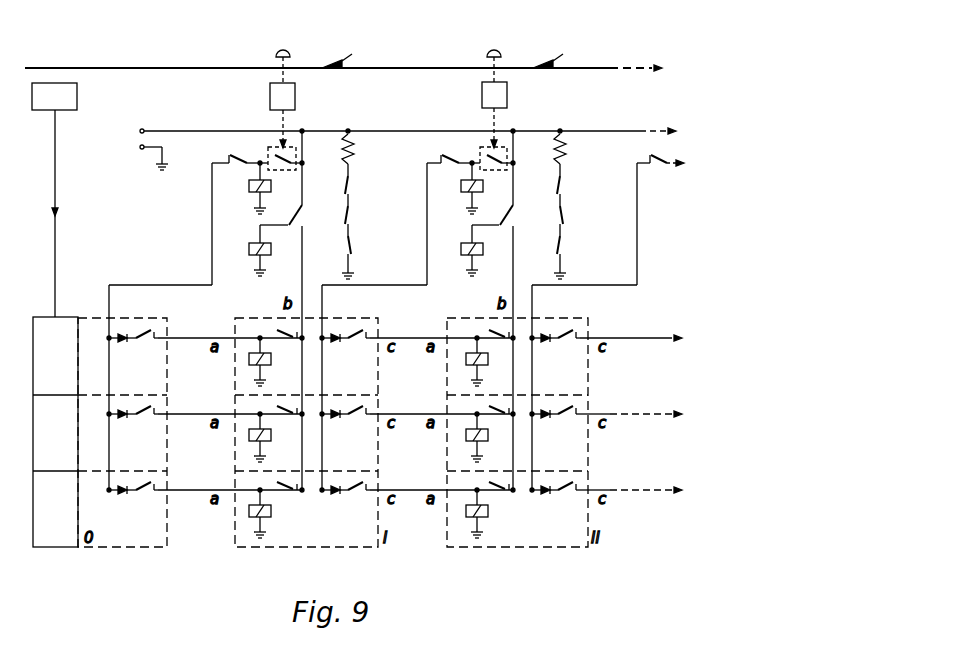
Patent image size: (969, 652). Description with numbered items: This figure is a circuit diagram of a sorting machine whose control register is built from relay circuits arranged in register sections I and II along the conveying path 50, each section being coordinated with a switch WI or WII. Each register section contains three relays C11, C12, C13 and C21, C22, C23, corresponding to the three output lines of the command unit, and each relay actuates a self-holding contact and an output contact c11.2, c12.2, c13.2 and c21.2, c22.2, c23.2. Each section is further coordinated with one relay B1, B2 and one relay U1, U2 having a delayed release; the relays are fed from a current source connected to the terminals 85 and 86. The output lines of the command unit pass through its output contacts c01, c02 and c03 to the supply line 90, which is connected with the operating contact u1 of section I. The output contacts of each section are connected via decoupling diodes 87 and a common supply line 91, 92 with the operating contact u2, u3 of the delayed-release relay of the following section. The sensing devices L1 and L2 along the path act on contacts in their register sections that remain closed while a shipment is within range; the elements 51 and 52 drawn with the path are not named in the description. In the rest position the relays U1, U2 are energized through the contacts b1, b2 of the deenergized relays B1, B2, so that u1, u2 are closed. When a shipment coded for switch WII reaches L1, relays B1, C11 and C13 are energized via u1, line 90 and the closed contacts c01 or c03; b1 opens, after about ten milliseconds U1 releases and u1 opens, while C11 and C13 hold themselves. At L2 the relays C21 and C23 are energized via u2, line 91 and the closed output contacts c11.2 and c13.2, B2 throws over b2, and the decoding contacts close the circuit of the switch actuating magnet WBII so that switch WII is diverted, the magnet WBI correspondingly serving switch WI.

The conveying path 50 is at (187, 68).
The detector 51 is at (277, 54).
The control unit 52 is at (48, 110).
The terminal 85 is at (140, 148).
The terminal 86 is at (140, 131).
The decoupling diode 87 is at (125, 333).
The supply line 90 is at (198, 287).
The common supply line 91 is at (413, 287).
The common supply line 92 is at (623, 287).
The sensing device L1 is at (269, 97).
The sensing device L2 is at (481, 97).
The switch WI is at (346, 58).
The switch WII is at (560, 55).
The track relay I WBI is at (367, 206).
The switch actuating magnet WBII is at (579, 206).
The operating contact u1 is at (237, 215).
The operating contact u2 is at (453, 215).
The operating contact u3 is at (650, 215).
The relay B1 is at (270, 187).
The relay B2 is at (483, 187).
The contact b1 is at (292, 215).
The contact b2 is at (505, 215).
The relay having delayed release U1 is at (247, 250).
The relay having delayed release U2 is at (459, 250).
The output contact c01 is at (113, 342).
The output contact c02 is at (113, 418).
The output contact c03 is at (113, 494).
The relay C11 is at (276, 358).
The relay C12 is at (276, 434).
The relay C13 is at (276, 510).
The relay C21 is at (490, 358).
The relay C22 is at (490, 434).
The relay C23 is at (490, 510).
The output contact c11.2 is at (416, 343).
The output contact c12.2 is at (416, 419).
The output contact c13.2 is at (416, 495).
The output contact c21.2 is at (606, 343).
The output contact c22.2 is at (606, 419).
The output contact c23.2 is at (606, 495).